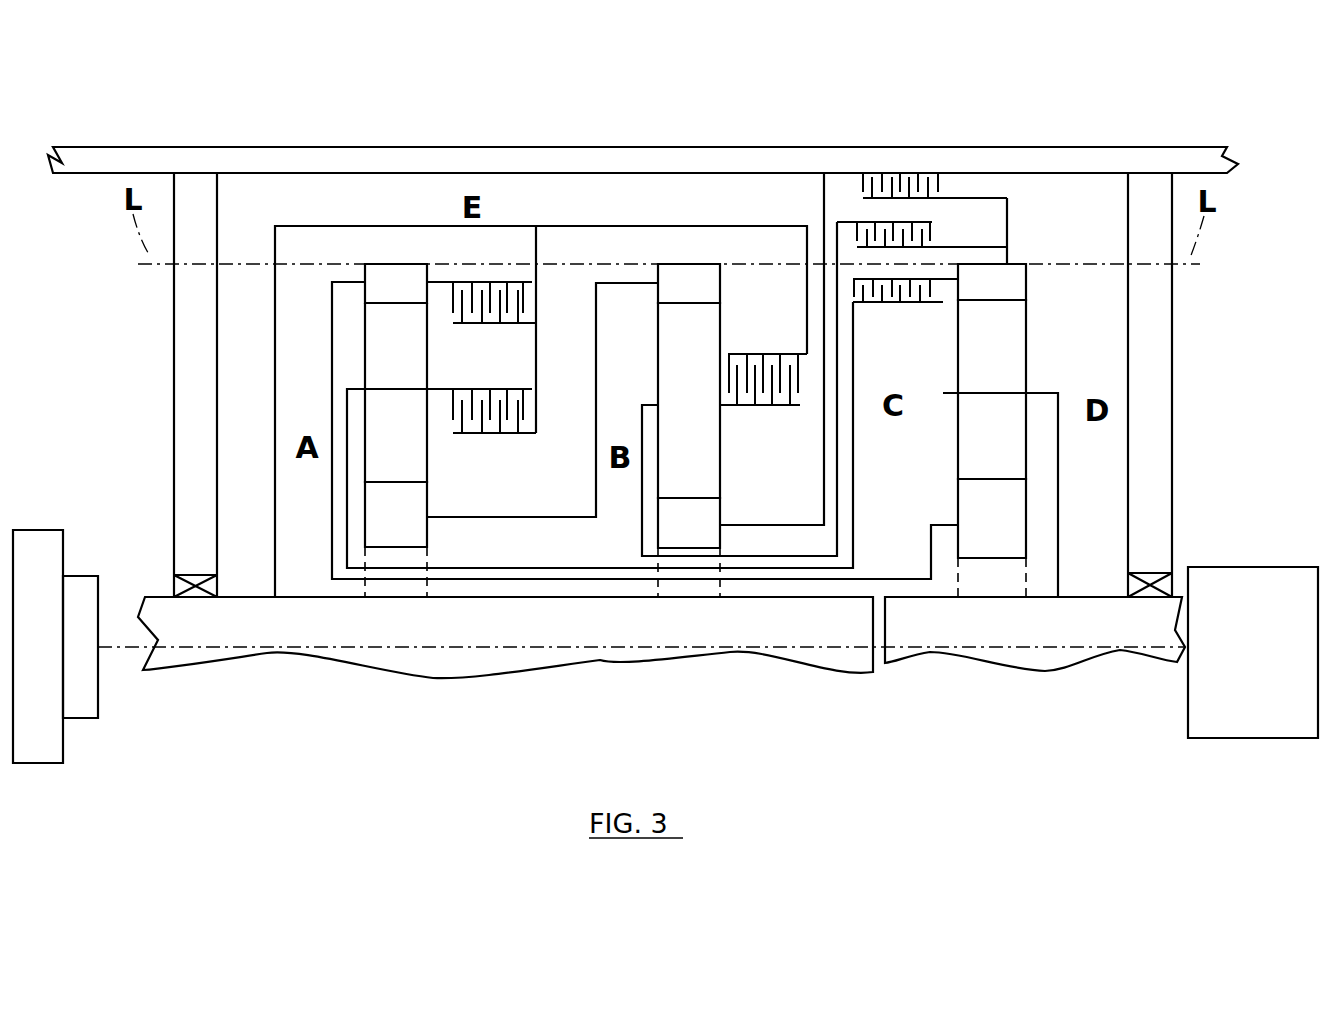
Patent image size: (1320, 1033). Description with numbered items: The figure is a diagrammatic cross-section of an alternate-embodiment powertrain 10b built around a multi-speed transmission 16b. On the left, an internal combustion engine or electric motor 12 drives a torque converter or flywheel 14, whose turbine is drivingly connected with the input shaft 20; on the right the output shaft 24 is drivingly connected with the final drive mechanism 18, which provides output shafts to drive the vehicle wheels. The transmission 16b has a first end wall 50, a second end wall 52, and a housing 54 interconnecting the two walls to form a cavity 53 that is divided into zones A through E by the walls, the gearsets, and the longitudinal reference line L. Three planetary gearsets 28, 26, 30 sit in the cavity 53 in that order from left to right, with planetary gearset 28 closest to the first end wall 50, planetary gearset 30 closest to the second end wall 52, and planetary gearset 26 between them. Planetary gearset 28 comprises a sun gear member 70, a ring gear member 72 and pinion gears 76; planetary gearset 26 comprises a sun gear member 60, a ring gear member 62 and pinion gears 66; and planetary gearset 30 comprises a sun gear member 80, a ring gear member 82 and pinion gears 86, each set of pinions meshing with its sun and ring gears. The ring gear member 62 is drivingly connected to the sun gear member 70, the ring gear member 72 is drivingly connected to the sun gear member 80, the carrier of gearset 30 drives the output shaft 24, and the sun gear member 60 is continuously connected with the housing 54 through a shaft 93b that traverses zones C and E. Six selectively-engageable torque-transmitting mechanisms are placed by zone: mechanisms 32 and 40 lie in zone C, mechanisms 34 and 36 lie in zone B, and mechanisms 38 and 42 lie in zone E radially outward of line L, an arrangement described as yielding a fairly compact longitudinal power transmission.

The powertrain 10b is at (290, 125).
The internal combustion engine or electric motor 12 is at (38, 646).
The torque converter or flywheel 14 is at (80, 647).
The transmission 16b is at (1188, 315).
The final drive mechanism 18 is at (1185, 710).
The input shaft 20 is at (433, 678).
The output shaft 24 is at (1065, 671).
The planetary gearset 26 is at (695, 550).
The planetary gearset 28 is at (398, 550).
The planetary gearset 30 is at (993, 560).
The torque-transmitting mechanism 32 is at (799, 405).
The torque-transmitting mechanism 34 is at (456, 325).
The torque-transmitting mechanism 36 is at (456, 435).
The torque-transmitting mechanism 38 is at (925, 222).
The torque-transmitting mechanism 40 is at (935, 305).
The torque-transmitting mechanism 42 is at (863, 178).
The first end wall 50 is at (172, 195).
The second end wall 52 is at (1172, 388).
The cavity 53 is at (1058, 218).
The housing 54 is at (948, 148).
The sun gear member 60 is at (689, 547).
The ring gear member 62 is at (689, 283).
The pinion gears 66 is at (689, 400).
The sun gear member 70 is at (396, 539).
The ring gear member 72 is at (396, 283).
The pinion gears 76 is at (396, 392).
The sun gear member 80 is at (992, 538).
The ring gear member 82 is at (992, 282).
The pinion gears 86 is at (992, 389).
The shaft 93b is at (820, 197).